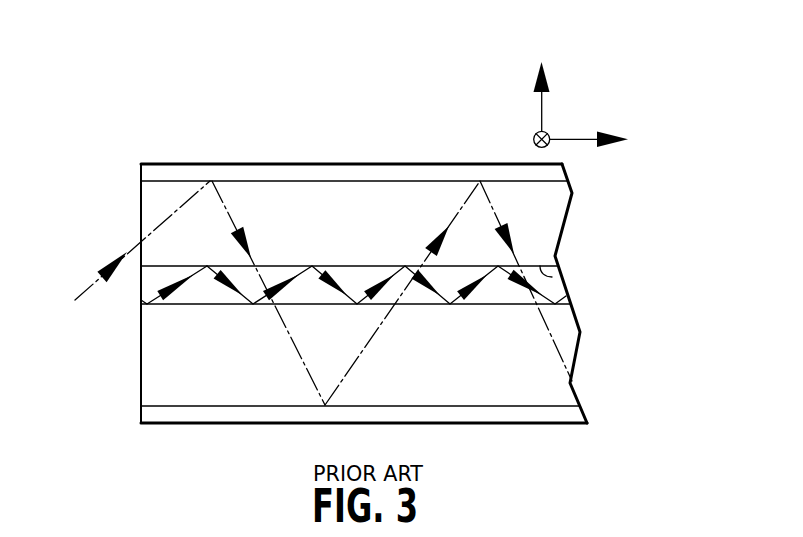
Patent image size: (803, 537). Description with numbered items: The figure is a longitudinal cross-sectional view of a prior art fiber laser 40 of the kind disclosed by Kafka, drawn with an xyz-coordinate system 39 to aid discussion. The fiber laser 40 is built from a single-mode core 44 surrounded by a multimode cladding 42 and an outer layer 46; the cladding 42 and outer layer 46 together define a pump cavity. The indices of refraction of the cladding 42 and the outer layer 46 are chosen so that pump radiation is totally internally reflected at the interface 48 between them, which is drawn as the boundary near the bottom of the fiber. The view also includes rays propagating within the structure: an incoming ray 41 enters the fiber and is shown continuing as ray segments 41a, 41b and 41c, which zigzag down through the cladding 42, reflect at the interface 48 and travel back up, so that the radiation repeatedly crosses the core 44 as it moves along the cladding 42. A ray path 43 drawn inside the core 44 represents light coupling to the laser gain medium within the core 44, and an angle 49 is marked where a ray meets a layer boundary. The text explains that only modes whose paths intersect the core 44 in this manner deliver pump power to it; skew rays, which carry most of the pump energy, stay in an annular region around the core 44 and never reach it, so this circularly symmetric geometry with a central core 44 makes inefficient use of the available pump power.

The xyz-coordinate system 39 is at (573, 110).
The fiber laser 40 is at (318, 158).
The incident light ray 41 is at (92, 283).
The refracted ray segment 41a is at (233, 218).
The reflected ray segment 41b is at (376, 328).
The reflected ray segment 41c is at (487, 205).
The multimode cladding 42 is at (161, 363).
The guided light path 43 is at (163, 299).
The single-mode core 44 is at (152, 282).
The outer layer 46 is at (153, 417).
The interface 48 is at (432, 406).
The angle of incidence 49 is at (552, 277).